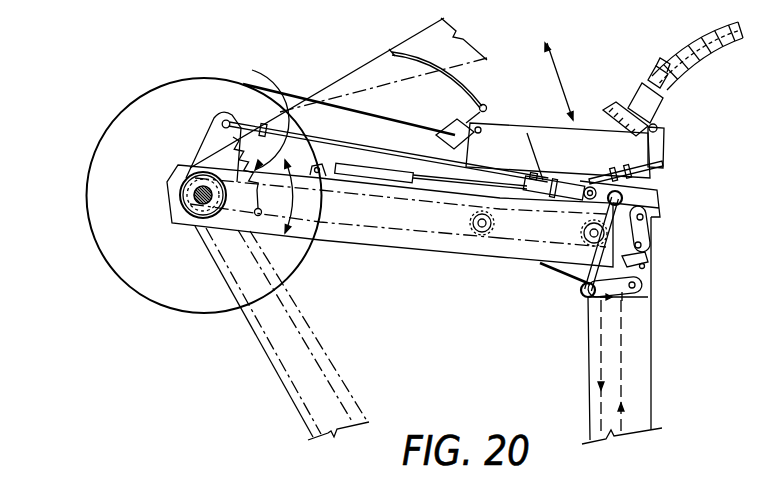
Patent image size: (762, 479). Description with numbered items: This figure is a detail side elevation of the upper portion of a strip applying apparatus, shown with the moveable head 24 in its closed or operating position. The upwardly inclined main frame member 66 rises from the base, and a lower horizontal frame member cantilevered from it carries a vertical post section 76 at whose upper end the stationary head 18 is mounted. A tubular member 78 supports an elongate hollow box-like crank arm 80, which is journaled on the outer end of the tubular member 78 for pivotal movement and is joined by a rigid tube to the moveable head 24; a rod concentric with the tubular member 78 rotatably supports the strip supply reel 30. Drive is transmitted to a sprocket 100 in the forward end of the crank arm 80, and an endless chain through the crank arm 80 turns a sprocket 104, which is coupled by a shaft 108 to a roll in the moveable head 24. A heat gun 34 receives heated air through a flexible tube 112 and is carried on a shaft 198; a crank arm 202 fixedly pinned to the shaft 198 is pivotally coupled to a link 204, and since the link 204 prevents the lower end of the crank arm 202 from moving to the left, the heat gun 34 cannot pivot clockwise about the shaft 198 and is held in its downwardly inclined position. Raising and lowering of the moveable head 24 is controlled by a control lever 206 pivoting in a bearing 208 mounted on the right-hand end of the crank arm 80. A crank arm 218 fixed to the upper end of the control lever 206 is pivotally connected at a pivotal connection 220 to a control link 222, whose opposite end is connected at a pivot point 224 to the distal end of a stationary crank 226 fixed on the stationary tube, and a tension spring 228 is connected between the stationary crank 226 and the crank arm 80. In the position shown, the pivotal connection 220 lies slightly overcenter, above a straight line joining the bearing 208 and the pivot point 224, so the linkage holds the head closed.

The stationary head 18 is at (557, 273).
The moveable head 24 is at (544, 126).
The strip supply reel 30 is at (97, 208).
The heat gun 34 is at (638, 92).
The main frame member 66 is at (327, 358).
The vertical post section 76 is at (650, 362).
The tubular member 78 is at (195, 226).
The crank arm 80 is at (373, 247).
The sprocket 100 is at (467, 237).
The sprocket 104 is at (585, 245).
The shaft 108 is at (411, 230).
The flexible tube 112 is at (697, 58).
The shaft 198 is at (657, 125).
The crank arm 202 is at (658, 147).
The link 204 is at (664, 160).
The control lever 206 is at (578, 283).
The bearing 208 is at (624, 201).
The crank arm 218 is at (648, 197).
The pivotal connection 220 is at (565, 178).
The control link 222 is at (428, 148).
The pivot point 224 is at (231, 118).
The stationary crank 226 is at (207, 145).
The tension spring 228 is at (286, 133).